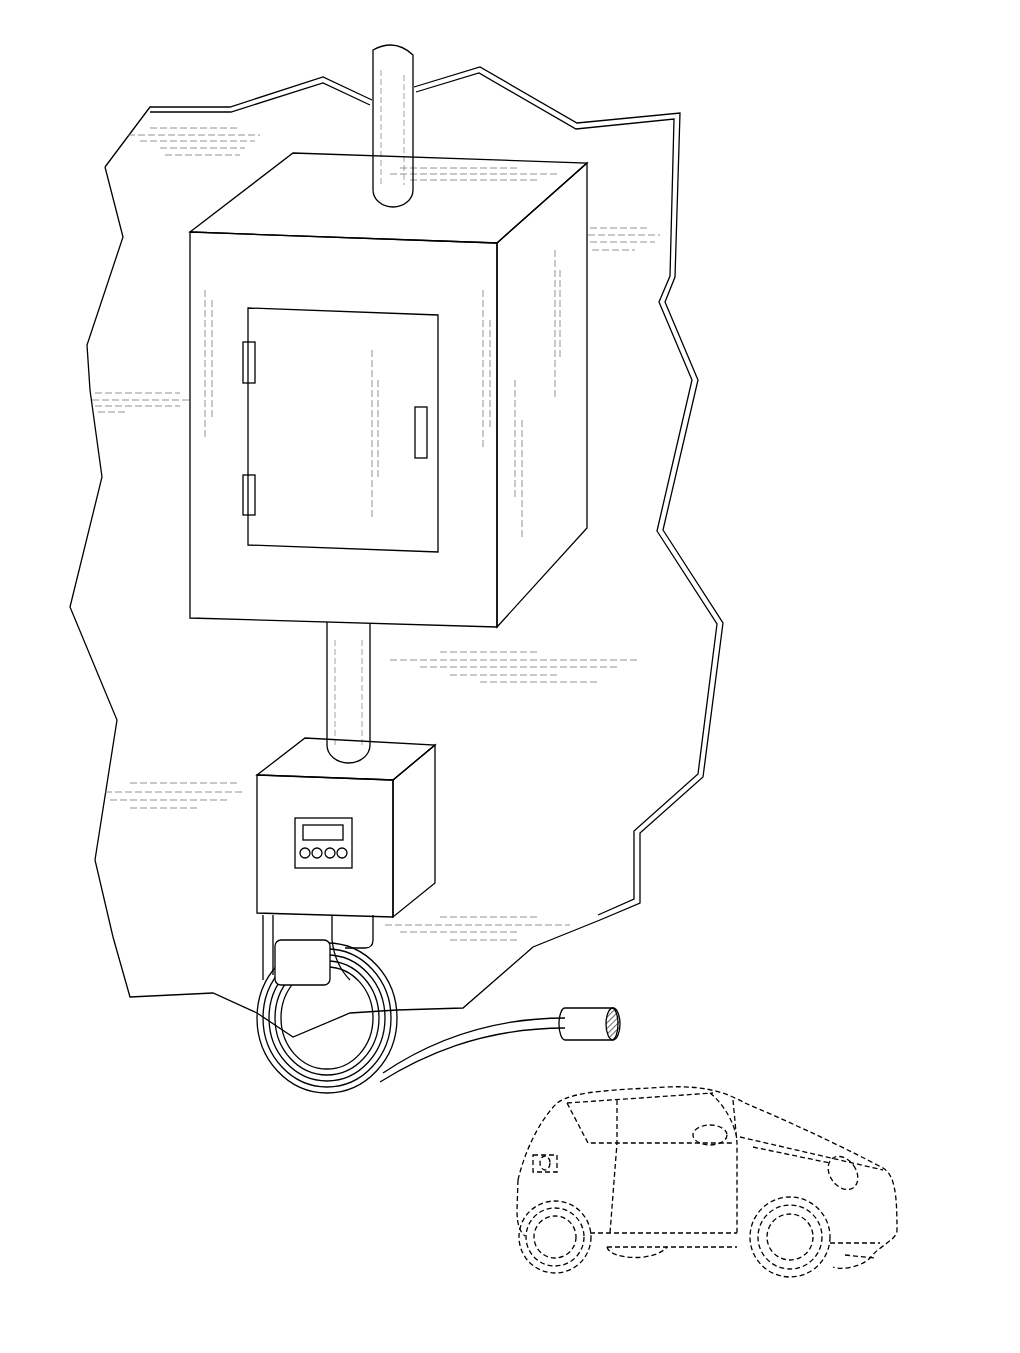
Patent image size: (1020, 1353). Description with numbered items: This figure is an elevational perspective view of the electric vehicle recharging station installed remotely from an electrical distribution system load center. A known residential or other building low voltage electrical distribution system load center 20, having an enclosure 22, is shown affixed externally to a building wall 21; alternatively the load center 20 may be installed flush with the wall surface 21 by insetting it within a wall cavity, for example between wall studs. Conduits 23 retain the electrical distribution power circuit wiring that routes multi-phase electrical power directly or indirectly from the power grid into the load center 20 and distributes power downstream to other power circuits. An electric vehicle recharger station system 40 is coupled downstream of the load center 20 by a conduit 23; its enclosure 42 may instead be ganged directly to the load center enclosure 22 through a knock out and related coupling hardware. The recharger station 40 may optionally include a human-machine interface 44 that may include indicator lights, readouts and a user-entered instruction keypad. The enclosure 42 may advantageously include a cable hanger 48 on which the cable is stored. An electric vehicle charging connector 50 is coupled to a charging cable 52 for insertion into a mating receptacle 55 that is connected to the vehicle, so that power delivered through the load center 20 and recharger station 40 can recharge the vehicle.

The electrical distribution system load center 20 is at (539, 646).
The building wall 21 is at (636, 595).
The enclosure 22 is at (557, 466).
The conduit 23 is at (392, 93).
The electric vehicle recharger station system 40 is at (469, 655).
The enclosure 42 is at (407, 865).
The human-machine interface 44 is at (303, 833).
The cable hanger 48 is at (300, 953).
The electric vehicle charging connector 50 is at (622, 1027).
The charging cable 52 is at (387, 982).
The mating receptacle 55 is at (542, 1163).